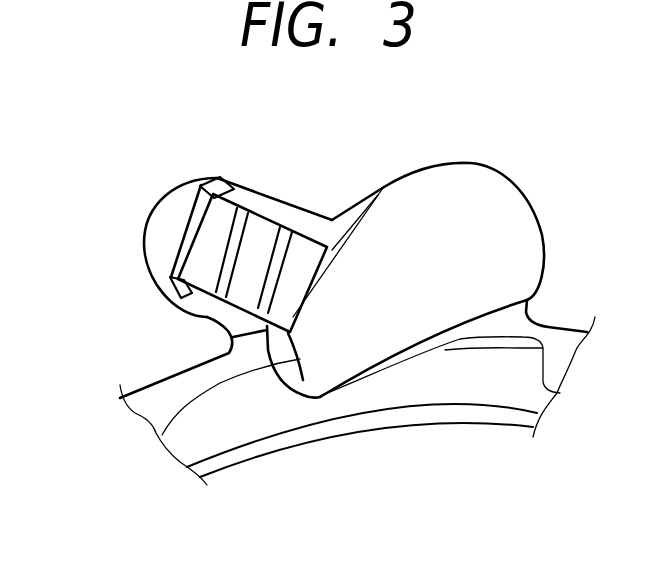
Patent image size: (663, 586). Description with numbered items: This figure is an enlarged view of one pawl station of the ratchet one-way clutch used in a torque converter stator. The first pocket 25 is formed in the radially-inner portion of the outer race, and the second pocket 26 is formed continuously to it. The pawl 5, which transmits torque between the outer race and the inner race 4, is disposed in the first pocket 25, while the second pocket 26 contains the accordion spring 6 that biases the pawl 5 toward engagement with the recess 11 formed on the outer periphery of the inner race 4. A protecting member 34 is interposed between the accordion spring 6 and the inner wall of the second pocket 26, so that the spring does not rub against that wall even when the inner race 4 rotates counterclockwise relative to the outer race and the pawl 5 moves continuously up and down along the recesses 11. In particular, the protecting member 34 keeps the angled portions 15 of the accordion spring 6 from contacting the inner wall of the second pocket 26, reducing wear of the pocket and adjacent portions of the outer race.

The inner race 4 is at (237, 425).
The pawl 5 is at (483, 190).
The accordion spring 6 is at (220, 267).
The recess 11 is at (350, 377).
The angled portions 15 is at (173, 270).
The first pocket 25 is at (367, 217).
The second pocket 26 is at (147, 220).
The protecting member 34 is at (203, 195).